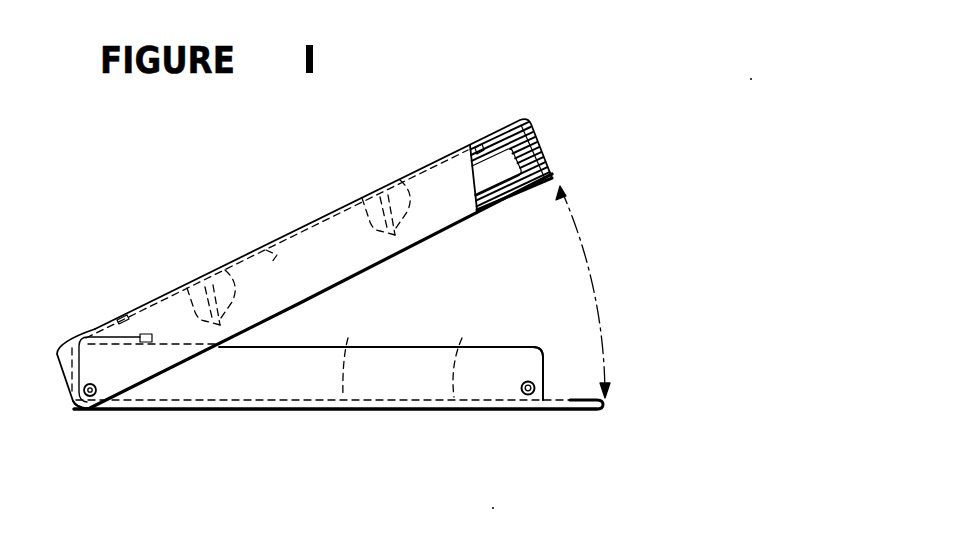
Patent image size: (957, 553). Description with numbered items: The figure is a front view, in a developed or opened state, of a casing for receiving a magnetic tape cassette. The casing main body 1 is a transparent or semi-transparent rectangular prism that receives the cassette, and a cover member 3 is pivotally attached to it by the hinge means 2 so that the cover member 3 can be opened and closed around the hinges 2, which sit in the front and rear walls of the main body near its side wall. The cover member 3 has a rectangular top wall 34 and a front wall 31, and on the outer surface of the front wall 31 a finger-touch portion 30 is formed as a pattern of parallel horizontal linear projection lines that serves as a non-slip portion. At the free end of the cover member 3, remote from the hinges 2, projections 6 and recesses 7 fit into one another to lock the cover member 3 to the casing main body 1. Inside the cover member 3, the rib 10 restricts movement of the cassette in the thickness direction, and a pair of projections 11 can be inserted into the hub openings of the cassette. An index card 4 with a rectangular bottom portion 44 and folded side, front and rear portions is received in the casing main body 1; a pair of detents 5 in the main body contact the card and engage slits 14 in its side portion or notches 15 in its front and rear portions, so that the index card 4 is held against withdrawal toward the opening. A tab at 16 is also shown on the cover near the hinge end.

The casing main body 1 is at (574, 406).
The hinge means 2 is at (93, 408).
The cover member 3 is at (306, 257).
The index card 4 is at (460, 349).
The detents 5 is at (96, 380).
The projections 6 is at (480, 184).
The recesses 7 is at (535, 388).
The rib 10 is at (462, 145).
The projections 11 is at (491, 112).
The slits 14 is at (547, 366).
The notches 15 is at (334, 411).
The latch tab 16 is at (93, 324).
The finger-touch portion 30 is at (534, 135).
The front wall of cover member 31 is at (360, 245).
The top wall of cover member 34 is at (274, 242).
The bottom portion of index card 44 is at (349, 349).